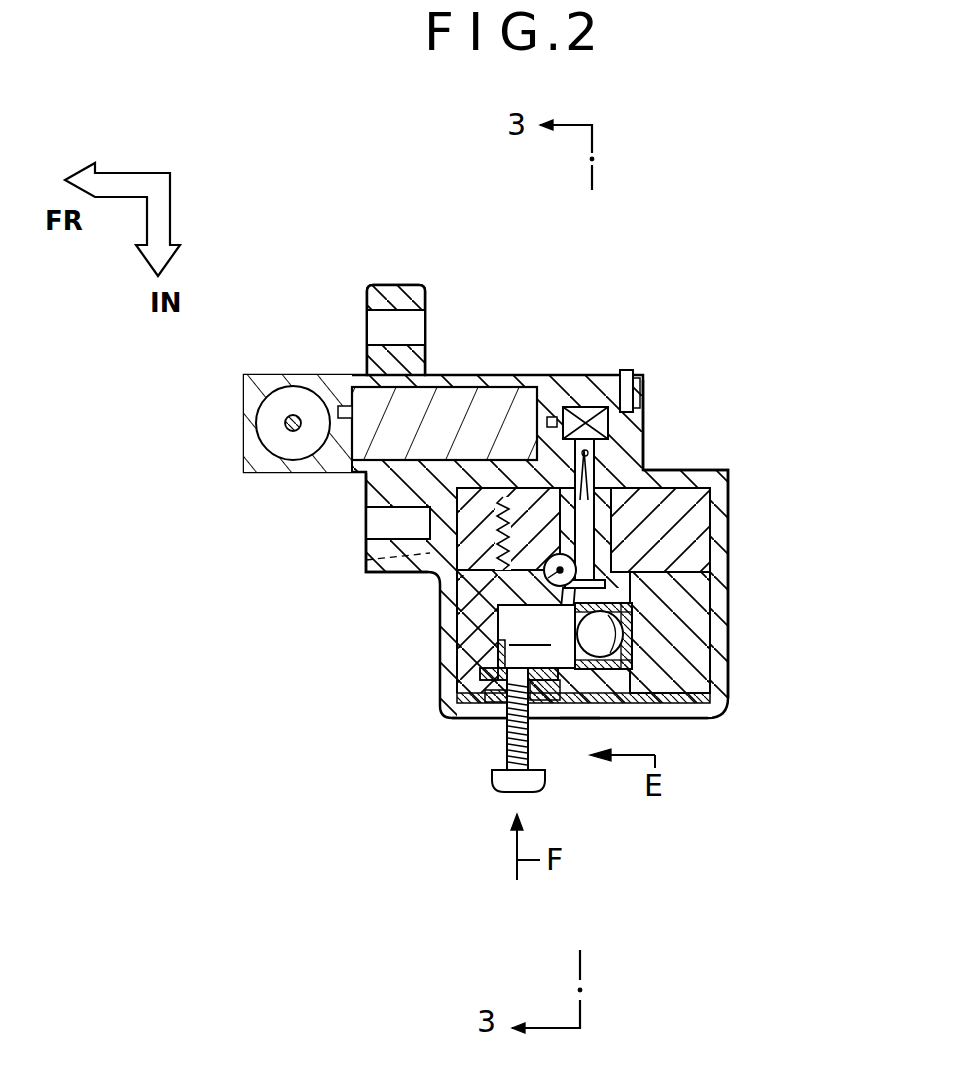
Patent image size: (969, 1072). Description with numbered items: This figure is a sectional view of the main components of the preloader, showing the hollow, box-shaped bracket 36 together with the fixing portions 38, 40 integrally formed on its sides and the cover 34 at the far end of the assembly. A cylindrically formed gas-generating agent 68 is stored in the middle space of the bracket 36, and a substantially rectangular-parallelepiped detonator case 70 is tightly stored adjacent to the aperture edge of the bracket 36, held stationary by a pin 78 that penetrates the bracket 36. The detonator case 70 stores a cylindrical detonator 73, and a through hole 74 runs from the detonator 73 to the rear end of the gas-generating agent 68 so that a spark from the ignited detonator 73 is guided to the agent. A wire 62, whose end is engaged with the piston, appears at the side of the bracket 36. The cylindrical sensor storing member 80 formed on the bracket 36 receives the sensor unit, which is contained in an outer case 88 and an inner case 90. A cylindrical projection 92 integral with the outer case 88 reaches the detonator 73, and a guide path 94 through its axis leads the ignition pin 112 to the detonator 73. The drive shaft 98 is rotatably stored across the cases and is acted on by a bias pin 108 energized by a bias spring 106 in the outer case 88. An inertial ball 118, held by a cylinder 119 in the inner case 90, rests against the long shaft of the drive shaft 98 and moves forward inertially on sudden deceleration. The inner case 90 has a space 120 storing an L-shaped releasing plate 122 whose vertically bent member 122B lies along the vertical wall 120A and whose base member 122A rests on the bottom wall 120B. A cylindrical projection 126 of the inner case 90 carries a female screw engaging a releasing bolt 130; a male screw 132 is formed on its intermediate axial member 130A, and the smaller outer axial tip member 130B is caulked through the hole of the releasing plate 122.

The cover 34 is at (700, 712).
The bracket 36 is at (488, 368).
The fixing portion 38 is at (375, 576).
The fixing portion 40 is at (403, 285).
The wire 62 is at (288, 426).
The gas-generating agent 68 is at (505, 398).
The detonator case 70 is at (643, 428).
The detonator 73 is at (598, 406).
The through hole 74 is at (345, 406).
The pin 78 is at (626, 368).
The sensor storing member 80 is at (728, 470).
The outer case 88 is at (680, 545).
The inner case 90 is at (693, 677).
The cylindrical projection 92 is at (597, 457).
The guide path 94 is at (610, 440).
The drive shaft 98 is at (457, 602).
The bias spring 106 is at (470, 512).
The bias pin 108 is at (467, 547).
The ignition pin 112 is at (672, 522).
The inertial ball 118 is at (615, 617).
The cylinder 119 is at (632, 648).
The space 120 is at (536, 636).
The vertical wall 120A is at (497, 642).
The bottom wall 120B is at (585, 722).
The releasing plate 122 is at (318, 700).
The base member 122A is at (500, 684).
The vertically bent member 122B is at (495, 670).
The cylindrical projection 126 is at (497, 706).
The releasing bolt 130 is at (455, 809).
The intermediate axial member 130A is at (510, 760).
The outer axial tip member 130B is at (508, 735).
The male screw 132 is at (562, 720).